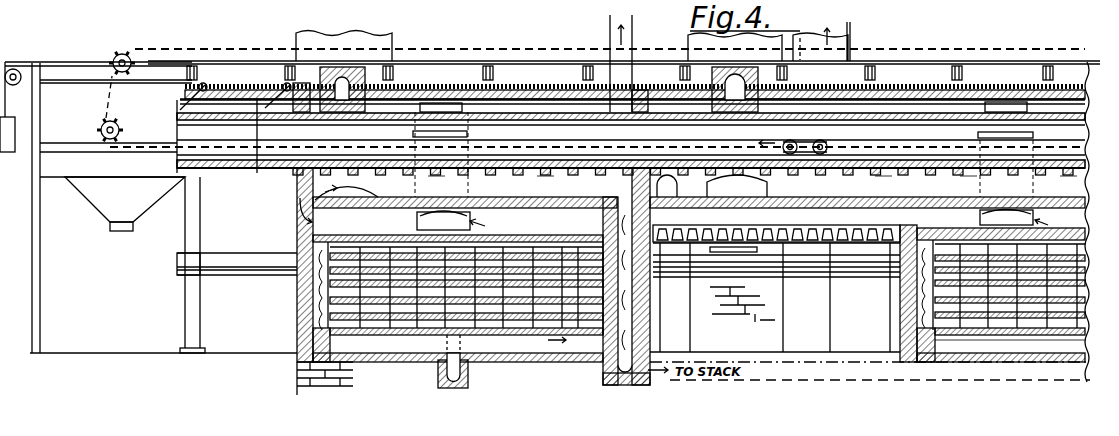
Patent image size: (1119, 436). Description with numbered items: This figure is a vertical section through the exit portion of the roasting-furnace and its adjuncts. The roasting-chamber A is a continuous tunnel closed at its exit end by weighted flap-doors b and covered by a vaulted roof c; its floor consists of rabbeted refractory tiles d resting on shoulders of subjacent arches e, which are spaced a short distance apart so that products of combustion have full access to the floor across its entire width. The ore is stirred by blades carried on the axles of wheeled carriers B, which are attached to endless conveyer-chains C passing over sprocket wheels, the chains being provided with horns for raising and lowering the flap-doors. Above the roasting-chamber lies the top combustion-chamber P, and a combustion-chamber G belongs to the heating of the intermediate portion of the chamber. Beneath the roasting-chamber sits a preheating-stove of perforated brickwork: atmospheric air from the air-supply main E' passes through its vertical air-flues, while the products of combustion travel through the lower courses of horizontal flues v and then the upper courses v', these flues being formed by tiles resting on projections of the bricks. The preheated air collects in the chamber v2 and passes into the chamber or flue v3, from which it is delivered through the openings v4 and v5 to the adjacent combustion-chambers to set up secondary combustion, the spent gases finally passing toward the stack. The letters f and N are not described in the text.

The roasting-chamber A is at (1070, 126).
The wheeled carriers B is at (788, 183).
The endless conveyer-chains C is at (597, 113).
The combustion-chamber G is at (470, 97).
The top combustion-chamber P is at (882, 100).
The filling material f is at (915, 95).
The weighted flap-doors b is at (138, 133).
The vaulted roof c is at (413, 133).
The floor-tiles d is at (263, 163).
The supporting-arches e is at (433, 177).
The air-supply main E' is at (237, 253).
The brick chamber N is at (745, 343).
The horizontal flues v is at (544, 278).
The horizontal flues v' is at (1010, 338).
The chamber v2 is at (975, 222).
The flue v3 is at (346, 192).
The opening v4 is at (297, 200).
The opening v5 is at (451, 221).